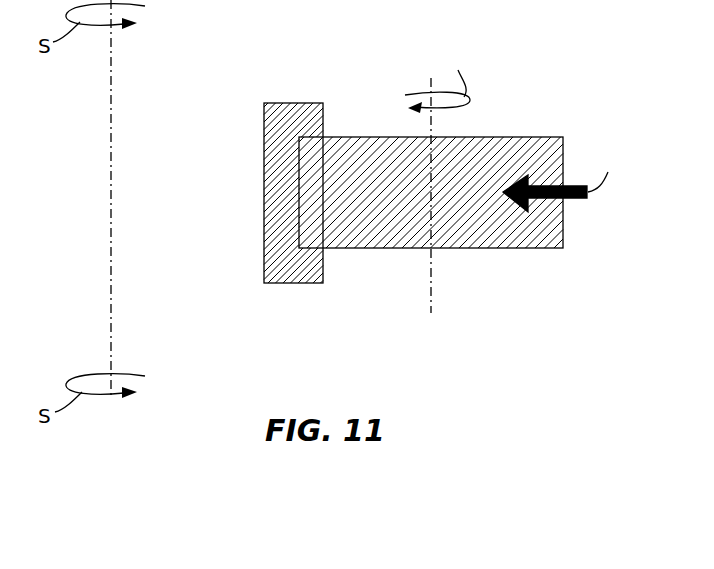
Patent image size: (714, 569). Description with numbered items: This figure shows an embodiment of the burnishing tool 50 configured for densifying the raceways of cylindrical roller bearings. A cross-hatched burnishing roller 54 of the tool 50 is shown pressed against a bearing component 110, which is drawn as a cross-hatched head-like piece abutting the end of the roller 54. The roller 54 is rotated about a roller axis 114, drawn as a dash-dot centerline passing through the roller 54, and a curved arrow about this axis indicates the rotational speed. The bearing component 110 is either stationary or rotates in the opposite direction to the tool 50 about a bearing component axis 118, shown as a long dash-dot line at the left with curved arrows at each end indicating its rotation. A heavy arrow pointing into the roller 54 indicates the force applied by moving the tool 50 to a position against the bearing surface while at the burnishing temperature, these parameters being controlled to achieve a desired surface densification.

The burnishing tool 50 is at (548, 76).
The burnishing roller 54 is at (527, 249).
The bearing component 110 is at (264, 128).
The roller axis 114 is at (433, 276).
The bearing component axis 118 is at (108, 146).